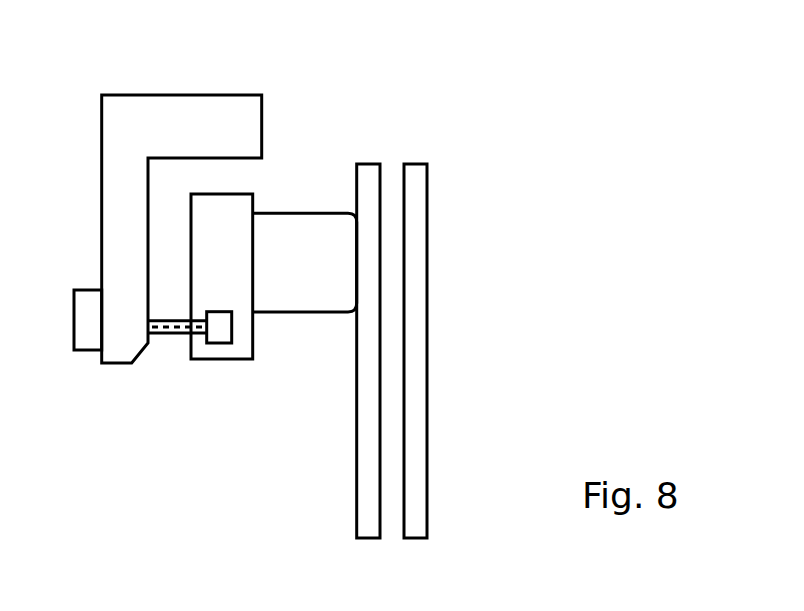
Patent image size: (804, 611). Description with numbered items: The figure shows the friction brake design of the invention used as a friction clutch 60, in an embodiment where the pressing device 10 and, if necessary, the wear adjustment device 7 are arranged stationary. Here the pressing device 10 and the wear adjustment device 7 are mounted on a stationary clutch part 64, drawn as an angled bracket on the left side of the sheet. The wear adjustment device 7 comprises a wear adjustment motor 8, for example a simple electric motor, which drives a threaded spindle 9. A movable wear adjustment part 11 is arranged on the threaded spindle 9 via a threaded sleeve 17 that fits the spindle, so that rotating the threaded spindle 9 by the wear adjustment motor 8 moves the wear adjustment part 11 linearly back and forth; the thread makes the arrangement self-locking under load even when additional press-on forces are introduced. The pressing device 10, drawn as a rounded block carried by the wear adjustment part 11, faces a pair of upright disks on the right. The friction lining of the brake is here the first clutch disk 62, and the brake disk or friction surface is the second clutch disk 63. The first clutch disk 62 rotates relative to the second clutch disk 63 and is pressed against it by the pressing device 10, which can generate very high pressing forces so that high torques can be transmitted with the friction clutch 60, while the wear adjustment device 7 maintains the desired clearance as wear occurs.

The wear adjustment device 7 is at (325, 78).
The wear adjustment motor 8 is at (88, 325).
The threaded spindle 9 is at (167, 325).
The pressing device 10 is at (326, 275).
The wear adjustment part 11 is at (245, 343).
The threaded sleeve 17 is at (222, 328).
The friction clutch 60 is at (439, 274).
The first clutch disk 62 is at (365, 201).
The second clutch disk 63 is at (415, 325).
The stationary clutch part 64 is at (155, 118).